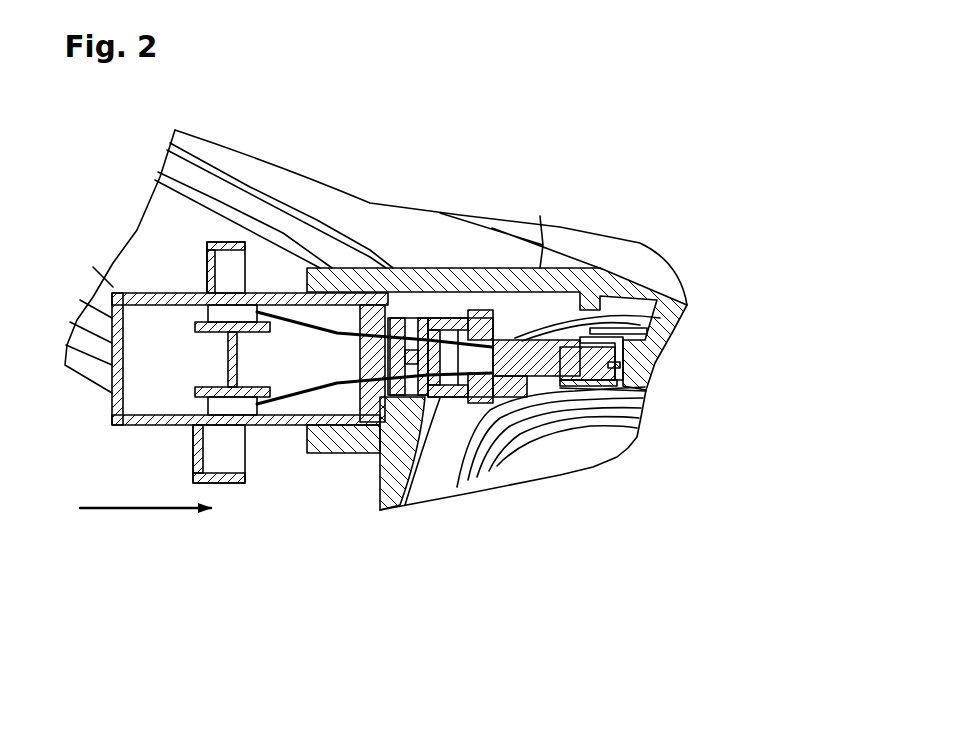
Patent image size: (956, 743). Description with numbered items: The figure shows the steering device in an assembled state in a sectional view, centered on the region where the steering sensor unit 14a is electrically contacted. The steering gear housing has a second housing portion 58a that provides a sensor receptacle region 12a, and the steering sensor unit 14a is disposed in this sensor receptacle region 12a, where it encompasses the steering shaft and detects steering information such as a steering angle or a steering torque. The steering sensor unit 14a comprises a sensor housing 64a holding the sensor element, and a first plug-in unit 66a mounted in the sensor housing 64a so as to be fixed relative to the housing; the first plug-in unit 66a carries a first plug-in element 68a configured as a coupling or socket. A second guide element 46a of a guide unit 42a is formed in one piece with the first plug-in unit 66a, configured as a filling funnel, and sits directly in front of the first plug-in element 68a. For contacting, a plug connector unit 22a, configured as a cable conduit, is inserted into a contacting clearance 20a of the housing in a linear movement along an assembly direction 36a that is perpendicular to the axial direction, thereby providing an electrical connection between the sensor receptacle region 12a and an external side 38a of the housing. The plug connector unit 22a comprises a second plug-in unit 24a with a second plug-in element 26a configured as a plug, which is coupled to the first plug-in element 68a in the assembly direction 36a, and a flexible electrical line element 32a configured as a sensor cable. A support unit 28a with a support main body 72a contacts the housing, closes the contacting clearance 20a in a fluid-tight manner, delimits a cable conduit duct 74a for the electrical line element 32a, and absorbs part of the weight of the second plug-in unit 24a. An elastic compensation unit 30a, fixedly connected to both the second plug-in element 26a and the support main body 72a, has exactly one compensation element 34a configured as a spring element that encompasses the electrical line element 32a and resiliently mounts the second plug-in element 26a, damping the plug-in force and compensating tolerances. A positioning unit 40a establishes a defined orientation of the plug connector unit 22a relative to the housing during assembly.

The sensor receptacle region 12a is at (440, 463).
The steering sensor unit 14a is at (528, 444).
The contacting clearance 20a is at (296, 283).
The plug connector unit 22a is at (275, 492).
The second plug-in unit 24a is at (546, 312).
The second plug-in element 26a is at (572, 372).
The support unit 28a is at (148, 286).
The compensation unit 30a is at (437, 308).
The electrical line element 32a is at (451, 333).
The compensation element 34a is at (489, 307).
The assembly direction 36a is at (110, 510).
The external side 38a is at (308, 565).
The positioning unit 40a is at (270, 455).
The guide unit 42a is at (378, 248).
The second guide element 46a is at (572, 368).
The second housing portion 58a is at (683, 264).
The sensor housing 64a is at (553, 418).
The first plug-in unit 66a is at (612, 322).
The first plug-in element 68a is at (622, 342).
The support main body 72a is at (192, 470).
The cable conduit duct 74a is at (288, 318).